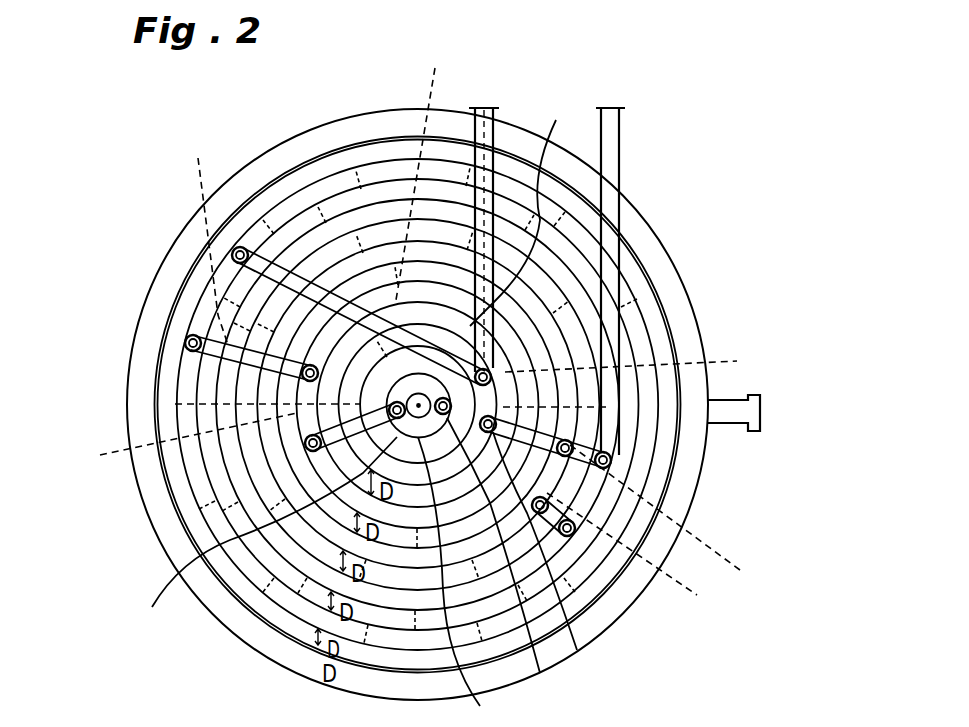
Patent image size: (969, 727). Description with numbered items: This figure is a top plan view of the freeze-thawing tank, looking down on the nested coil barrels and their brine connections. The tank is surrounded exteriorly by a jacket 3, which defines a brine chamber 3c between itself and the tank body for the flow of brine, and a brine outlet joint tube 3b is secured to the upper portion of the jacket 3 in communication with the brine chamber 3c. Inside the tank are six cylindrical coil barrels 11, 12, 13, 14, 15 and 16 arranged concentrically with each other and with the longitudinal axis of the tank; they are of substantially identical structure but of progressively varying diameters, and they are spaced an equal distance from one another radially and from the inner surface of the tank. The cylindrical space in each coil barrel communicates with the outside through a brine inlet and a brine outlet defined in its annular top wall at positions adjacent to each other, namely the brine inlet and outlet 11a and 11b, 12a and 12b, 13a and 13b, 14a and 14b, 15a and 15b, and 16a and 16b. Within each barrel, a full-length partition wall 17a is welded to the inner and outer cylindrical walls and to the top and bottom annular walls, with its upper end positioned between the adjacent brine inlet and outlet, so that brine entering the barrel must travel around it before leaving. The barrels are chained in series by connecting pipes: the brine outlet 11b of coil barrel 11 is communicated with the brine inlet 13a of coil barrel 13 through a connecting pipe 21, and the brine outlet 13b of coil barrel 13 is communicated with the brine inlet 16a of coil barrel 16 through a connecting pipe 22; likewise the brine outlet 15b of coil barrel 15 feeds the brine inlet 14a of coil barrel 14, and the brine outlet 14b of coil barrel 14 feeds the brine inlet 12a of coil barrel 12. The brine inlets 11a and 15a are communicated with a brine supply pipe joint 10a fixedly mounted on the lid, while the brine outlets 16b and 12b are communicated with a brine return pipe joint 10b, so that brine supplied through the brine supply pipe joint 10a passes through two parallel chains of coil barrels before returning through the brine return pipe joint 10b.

The jacket 3 is at (631, 200).
The brine outlet joint tube 3b is at (760, 412).
The brine chamber 3c is at (178, 270).
The brine supply pipe joint 10a is at (488, 108).
The brine return pipe joint 10b is at (607, 108).
The cylindrical coil barrel 11 is at (417, 443).
The brine inlet 11a is at (540, 673).
The brine outlet 11b is at (265, 541).
The cylindrical coil barrel 12 is at (497, 416).
The brine inlet 12a is at (577, 650).
The brine outlet 12b is at (496, 322).
The cylindrical coil barrel 13 is at (492, 373).
The brine inlet 13a is at (392, 422).
The brine outlet 13b is at (308, 380).
The cylindrical coil barrel 14 is at (523, 206).
The brine inlet 14a is at (574, 540).
The brine outlet 14b is at (611, 466).
The cylindrical coil barrel 15 is at (375, 203).
The brine inlet 15a is at (573, 452).
The brine outlet 15b is at (548, 515).
The cylindrical coil barrel 16 is at (330, 175).
The brine inlet 16a is at (228, 352).
The brine outlet 16b is at (238, 247).
The partition wall 17a is at (420, 338).
The connecting pipe 21 is at (305, 447).
The connecting pipe 22 is at (185, 335).